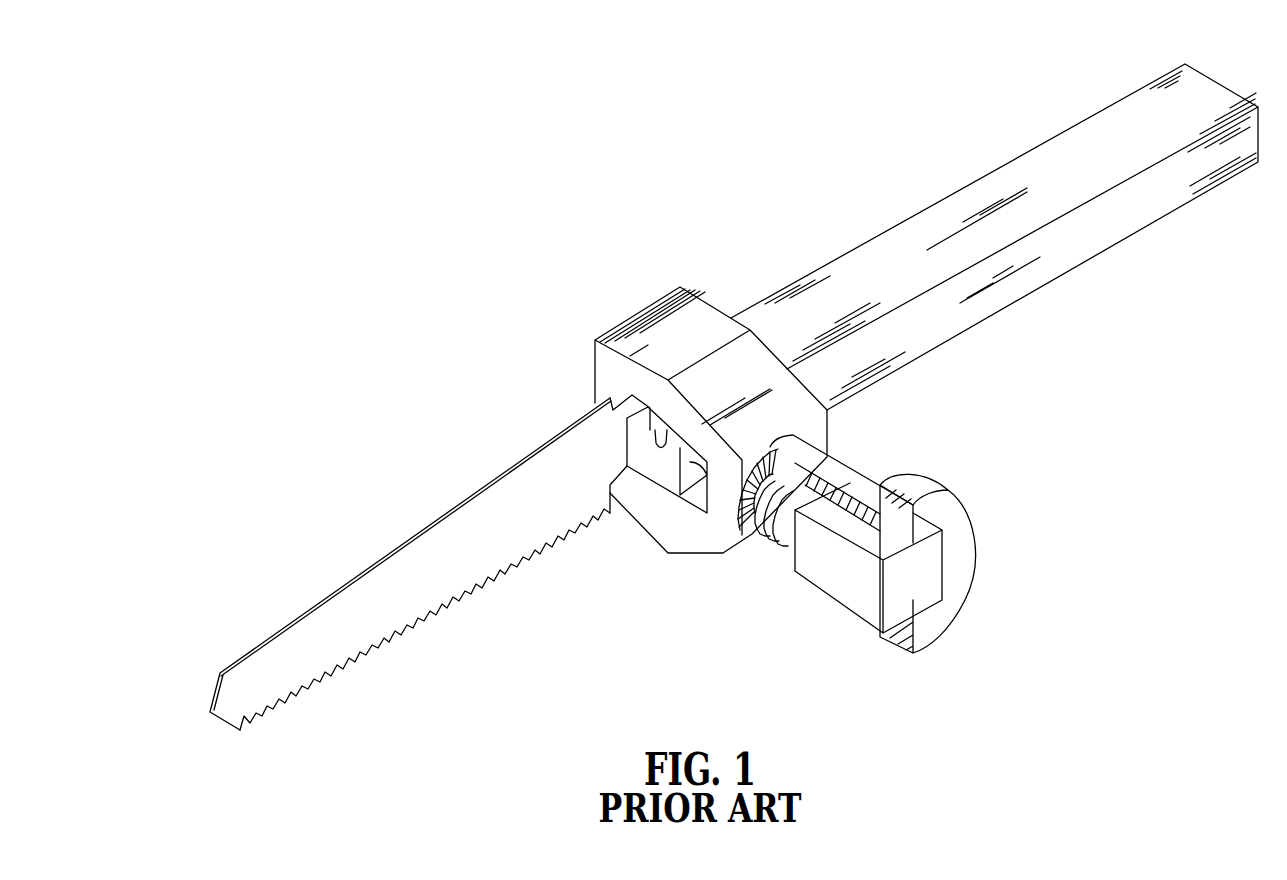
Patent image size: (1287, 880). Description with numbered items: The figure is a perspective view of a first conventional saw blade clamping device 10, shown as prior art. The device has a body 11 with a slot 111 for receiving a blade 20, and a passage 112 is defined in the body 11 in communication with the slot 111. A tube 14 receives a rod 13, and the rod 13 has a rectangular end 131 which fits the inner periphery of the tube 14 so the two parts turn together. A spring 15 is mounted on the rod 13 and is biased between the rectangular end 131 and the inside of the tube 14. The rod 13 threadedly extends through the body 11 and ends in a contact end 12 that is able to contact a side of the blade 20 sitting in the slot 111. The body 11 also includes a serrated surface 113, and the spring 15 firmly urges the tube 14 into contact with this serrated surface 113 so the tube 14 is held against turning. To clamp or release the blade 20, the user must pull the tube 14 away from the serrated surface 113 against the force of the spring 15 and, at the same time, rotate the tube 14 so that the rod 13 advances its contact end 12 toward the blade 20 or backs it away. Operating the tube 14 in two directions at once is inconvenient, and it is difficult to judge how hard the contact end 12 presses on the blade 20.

The saw blade clamping device 10 is at (645, 266).
The body 11 is at (625, 363).
The slot 111 is at (632, 483).
The passage 112 is at (660, 432).
The contact end 12 is at (653, 460).
The serrated surface 113 is at (737, 503).
The rod 13 is at (810, 587).
The rectangular end 131 is at (865, 593).
The tube 14 is at (977, 512).
The spring 15 is at (748, 545).
The blade 20 is at (352, 595).